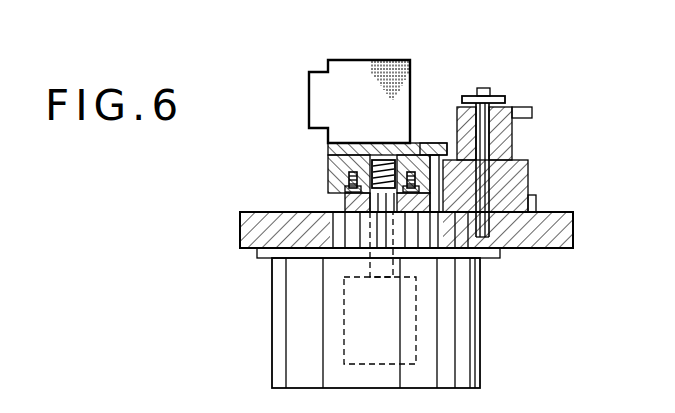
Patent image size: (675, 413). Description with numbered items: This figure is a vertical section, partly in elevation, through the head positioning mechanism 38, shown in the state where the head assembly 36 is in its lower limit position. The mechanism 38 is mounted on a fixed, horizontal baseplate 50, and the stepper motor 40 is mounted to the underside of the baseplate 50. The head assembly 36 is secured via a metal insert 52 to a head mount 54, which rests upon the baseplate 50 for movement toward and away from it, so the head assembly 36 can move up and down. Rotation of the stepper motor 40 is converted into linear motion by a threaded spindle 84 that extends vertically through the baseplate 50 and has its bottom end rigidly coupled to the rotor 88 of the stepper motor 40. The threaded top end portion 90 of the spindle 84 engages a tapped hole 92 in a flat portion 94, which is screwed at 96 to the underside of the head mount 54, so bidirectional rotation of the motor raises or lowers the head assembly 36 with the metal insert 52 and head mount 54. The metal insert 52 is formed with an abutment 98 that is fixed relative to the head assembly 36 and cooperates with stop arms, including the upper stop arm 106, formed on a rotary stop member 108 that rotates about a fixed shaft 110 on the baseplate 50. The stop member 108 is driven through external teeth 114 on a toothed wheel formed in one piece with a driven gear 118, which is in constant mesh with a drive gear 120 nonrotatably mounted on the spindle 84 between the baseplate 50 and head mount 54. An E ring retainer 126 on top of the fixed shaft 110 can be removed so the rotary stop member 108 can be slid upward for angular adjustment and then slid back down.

The head assembly 36 is at (379, 60).
The head positioning mechanism 38 is at (297, 50).
The stepper motor 40 is at (482, 350).
The baseplate 50 is at (573, 240).
The metal insert 52 is at (340, 150).
The head mount 54 is at (342, 160).
The threaded spindle 84 is at (370, 265).
The rotor 88 is at (345, 298).
The threaded top end portion 90 is at (375, 142).
The tapped hole 92 is at (345, 176).
The flat portion 94 is at (340, 182).
The screw 96 is at (418, 143).
The abutment 98 is at (440, 143).
The upper stop arm 106 is at (522, 107).
The rotary stop member 108 is at (507, 125).
The fixed shaft 110 is at (502, 142).
The external teeth 114 is at (522, 160).
The driven gear 118 is at (531, 200).
The drive gear 120 is at (332, 206).
The E ring retainer 126 is at (497, 93).